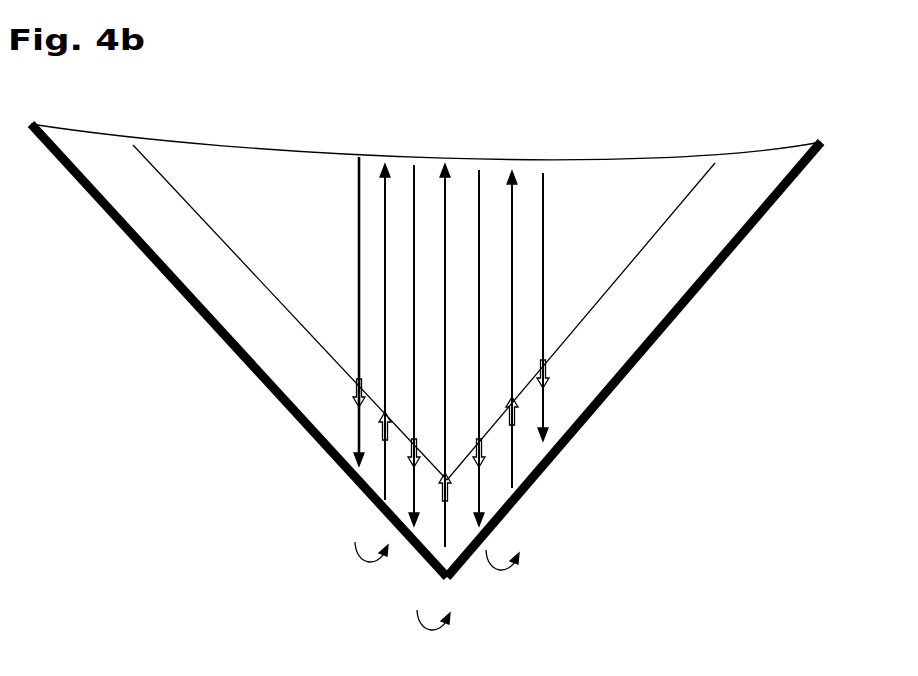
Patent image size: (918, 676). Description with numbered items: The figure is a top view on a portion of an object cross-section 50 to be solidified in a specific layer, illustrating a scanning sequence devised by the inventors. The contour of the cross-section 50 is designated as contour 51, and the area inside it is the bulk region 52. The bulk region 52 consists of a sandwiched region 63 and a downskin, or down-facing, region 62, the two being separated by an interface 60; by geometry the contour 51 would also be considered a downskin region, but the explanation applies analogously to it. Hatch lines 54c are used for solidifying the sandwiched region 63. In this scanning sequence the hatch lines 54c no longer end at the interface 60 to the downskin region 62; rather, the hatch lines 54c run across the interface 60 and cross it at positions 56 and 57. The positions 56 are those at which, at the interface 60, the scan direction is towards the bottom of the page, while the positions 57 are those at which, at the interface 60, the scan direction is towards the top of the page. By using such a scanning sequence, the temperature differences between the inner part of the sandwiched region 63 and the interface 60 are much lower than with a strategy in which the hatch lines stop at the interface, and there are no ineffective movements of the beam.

The cross-section 50 is at (437, 350).
The contour 51 is at (120, 232).
The bulk region 52 is at (205, 252).
The hatch lines 54c is at (480, 228).
The positions 56 is at (485, 453).
The positions 57 is at (440, 491).
The interface 60 is at (693, 188).
The downskin region 62 is at (712, 212).
The sandwiched region 63 is at (584, 278).